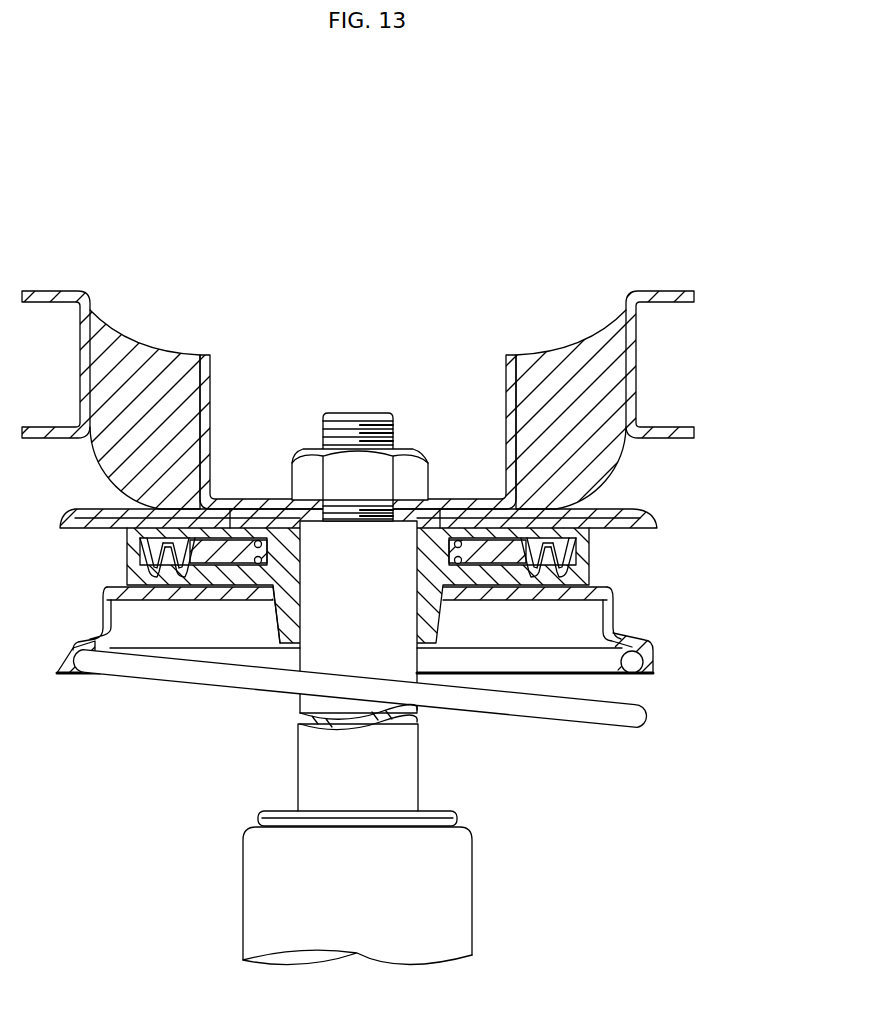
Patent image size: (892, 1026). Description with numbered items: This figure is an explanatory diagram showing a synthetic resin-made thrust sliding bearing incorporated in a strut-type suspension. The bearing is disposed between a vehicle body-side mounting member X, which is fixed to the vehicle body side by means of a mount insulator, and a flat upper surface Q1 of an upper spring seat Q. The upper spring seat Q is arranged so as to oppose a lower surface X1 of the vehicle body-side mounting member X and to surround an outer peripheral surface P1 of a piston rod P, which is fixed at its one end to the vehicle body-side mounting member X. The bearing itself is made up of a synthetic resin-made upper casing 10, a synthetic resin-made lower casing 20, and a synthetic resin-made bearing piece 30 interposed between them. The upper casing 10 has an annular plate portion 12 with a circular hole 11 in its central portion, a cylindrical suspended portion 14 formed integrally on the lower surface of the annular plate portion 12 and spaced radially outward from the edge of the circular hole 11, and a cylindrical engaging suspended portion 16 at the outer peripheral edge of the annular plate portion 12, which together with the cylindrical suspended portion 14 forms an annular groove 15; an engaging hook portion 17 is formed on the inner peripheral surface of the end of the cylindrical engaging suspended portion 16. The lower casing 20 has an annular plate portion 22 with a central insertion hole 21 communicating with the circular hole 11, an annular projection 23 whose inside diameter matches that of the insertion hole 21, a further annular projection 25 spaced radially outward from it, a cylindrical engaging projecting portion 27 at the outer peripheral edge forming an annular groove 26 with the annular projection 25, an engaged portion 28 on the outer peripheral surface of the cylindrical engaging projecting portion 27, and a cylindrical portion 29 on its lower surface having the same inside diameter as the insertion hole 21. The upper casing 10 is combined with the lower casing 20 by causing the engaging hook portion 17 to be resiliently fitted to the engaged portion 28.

The upper casing 10 is at (480, 526).
The circular hole 11 is at (417, 539).
The annular plate portion 12 is at (563, 525).
The cylindrical suspended portion 14 is at (580, 568).
The annular groove 15 is at (563, 542).
The cylindrical engaging suspended portion 16 is at (582, 552).
The engaging hook portion 17 is at (583, 578).
The lower casing 20 is at (252, 582).
The insertion hole 21 is at (300, 578).
The annular plate portion 22 is at (211, 578).
The annular projection 23 is at (285, 562).
The annular projection 25 is at (158, 516).
The annular groove 26 is at (167, 572).
The cylindrical engaging projecting portion 27 is at (147, 563).
The engaged portion 28 is at (147, 567).
The cylindrical portion 29 is at (287, 623).
The bearing piece 30 is at (483, 556).
The upper spring seat Q is at (610, 624).
The flat upper surface Q1 is at (530, 577).
The piston rod P is at (395, 790).
The outer peripheral surface P1 is at (418, 658).
The vehicle body-side mounting member X is at (440, 528).
The lower surface X1 is at (245, 530).